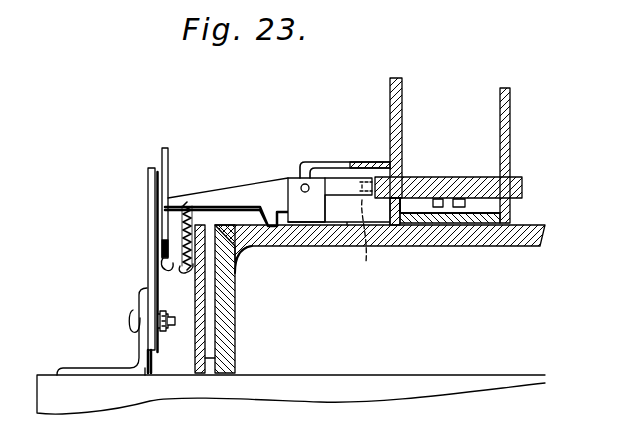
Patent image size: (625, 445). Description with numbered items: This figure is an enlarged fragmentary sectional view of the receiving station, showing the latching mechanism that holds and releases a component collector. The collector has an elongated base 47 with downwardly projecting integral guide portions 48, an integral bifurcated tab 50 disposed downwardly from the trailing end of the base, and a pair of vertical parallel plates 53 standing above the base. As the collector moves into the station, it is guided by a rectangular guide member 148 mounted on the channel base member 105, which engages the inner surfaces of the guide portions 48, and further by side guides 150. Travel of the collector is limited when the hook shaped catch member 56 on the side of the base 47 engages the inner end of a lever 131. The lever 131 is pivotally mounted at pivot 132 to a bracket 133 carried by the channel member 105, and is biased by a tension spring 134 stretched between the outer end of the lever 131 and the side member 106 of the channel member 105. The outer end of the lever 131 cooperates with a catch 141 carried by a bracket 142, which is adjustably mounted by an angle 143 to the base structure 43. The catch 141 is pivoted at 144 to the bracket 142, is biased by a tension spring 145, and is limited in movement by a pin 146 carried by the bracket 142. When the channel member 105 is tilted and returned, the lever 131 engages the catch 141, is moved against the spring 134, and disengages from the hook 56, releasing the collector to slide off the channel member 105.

The sheet 43 is at (45, 375).
The angle 143 is at (100, 372).
The bracket 142 is at (148, 222).
The pin 146 is at (166, 200).
The catch 141 is at (168, 162).
The pivot 144 is at (158, 250).
The tension spring 145 is at (176, 274).
The side member 106 is at (198, 314).
The tension spring 134 is at (188, 246).
The channel base member 105 is at (235, 331).
The rectangular guide member 148 is at (422, 226).
The lever 131 is at (252, 192).
The bracket 133 is at (303, 212).
The pivot 132 is at (297, 180).
The side guides 150 is at (346, 162).
The plate 53 is at (500, 135).
The base 47 is at (522, 186).
The guide portion 48 is at (505, 222).
The bifurcated tab 50 is at (472, 207).
The hook shaped catch member 56 is at (364, 242).